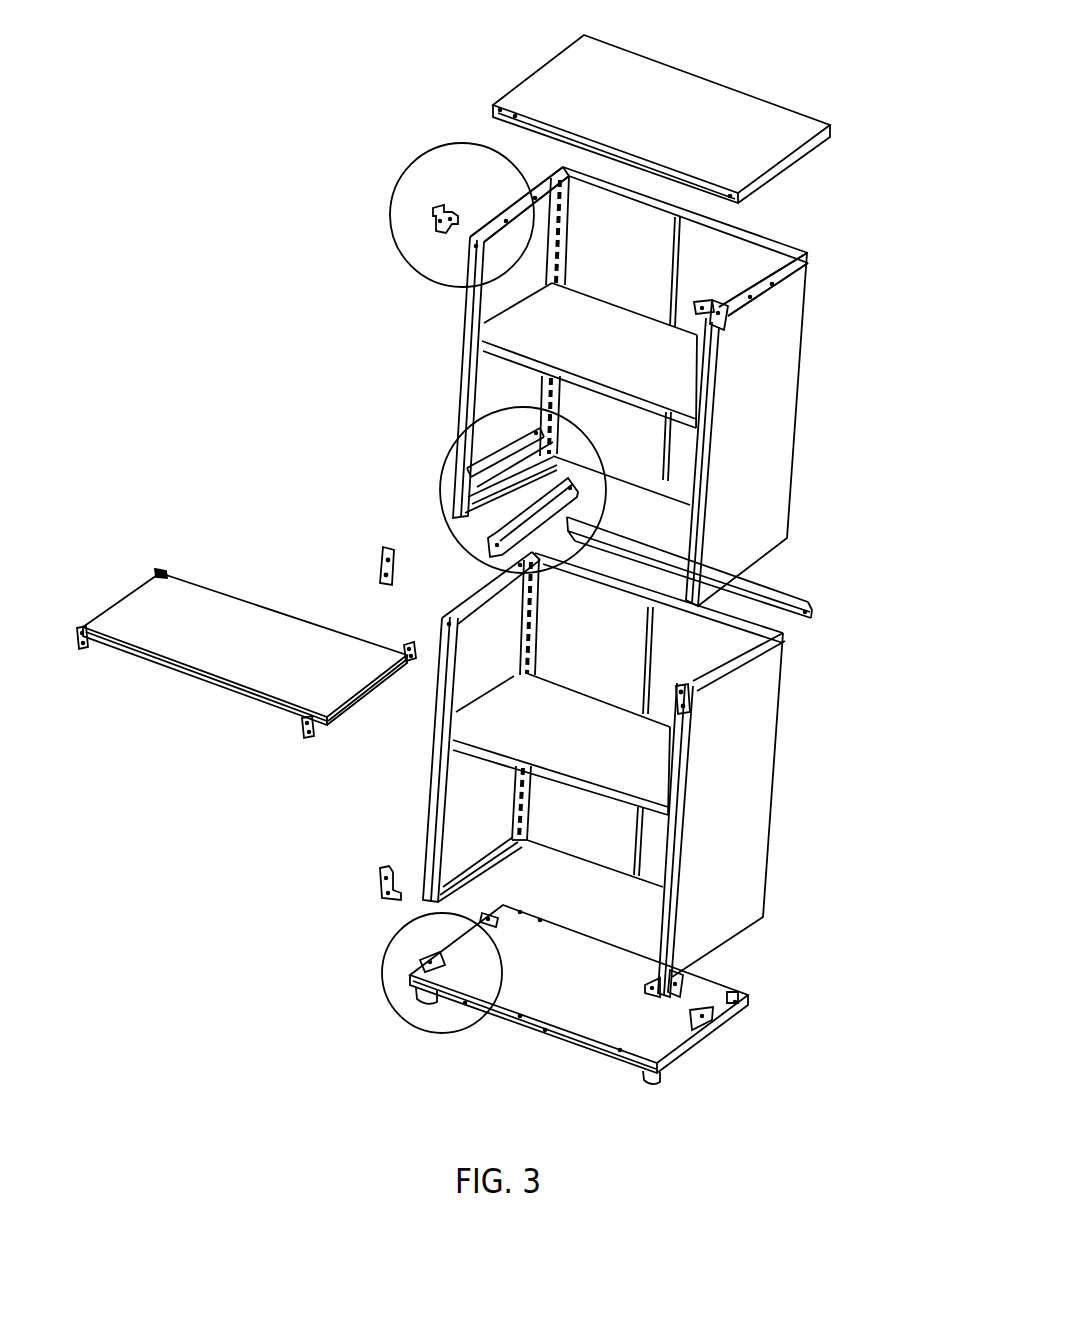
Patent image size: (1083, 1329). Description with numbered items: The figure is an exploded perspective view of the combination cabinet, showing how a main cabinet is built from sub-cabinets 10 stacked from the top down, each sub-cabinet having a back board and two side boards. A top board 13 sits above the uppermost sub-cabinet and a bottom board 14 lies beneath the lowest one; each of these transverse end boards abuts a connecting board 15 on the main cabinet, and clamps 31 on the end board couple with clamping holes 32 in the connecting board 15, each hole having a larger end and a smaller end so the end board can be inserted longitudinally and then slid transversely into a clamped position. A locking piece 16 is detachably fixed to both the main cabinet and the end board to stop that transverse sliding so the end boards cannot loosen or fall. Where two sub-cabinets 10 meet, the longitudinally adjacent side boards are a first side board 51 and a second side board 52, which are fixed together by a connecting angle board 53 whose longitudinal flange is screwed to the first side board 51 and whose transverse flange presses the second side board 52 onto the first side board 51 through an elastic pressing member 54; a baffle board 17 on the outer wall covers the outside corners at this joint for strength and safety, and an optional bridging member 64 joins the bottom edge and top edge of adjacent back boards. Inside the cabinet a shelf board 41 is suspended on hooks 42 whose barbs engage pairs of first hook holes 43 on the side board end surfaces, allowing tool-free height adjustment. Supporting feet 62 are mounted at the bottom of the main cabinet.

The sub-cabinet 10 is at (805, 430).
The top board 13 is at (713, 118).
The bottom board 14 is at (590, 1008).
The connecting board 15 is at (500, 213).
The locking piece 16 is at (430, 225).
The baffle board 17 is at (380, 560).
The clamp 31 is at (437, 960).
The clamping hole 32 is at (515, 197).
The shelf board 41 is at (522, 338).
The hook 42 is at (160, 573).
The first hook hole 43 is at (505, 810).
The first side board 51 is at (460, 787).
The second side board 52 is at (498, 380).
The connecting angle board 53 is at (492, 533).
The elastic pressing member 54 is at (520, 450).
The supporting foot 62 is at (660, 1078).
The bridging member 64 is at (812, 607).